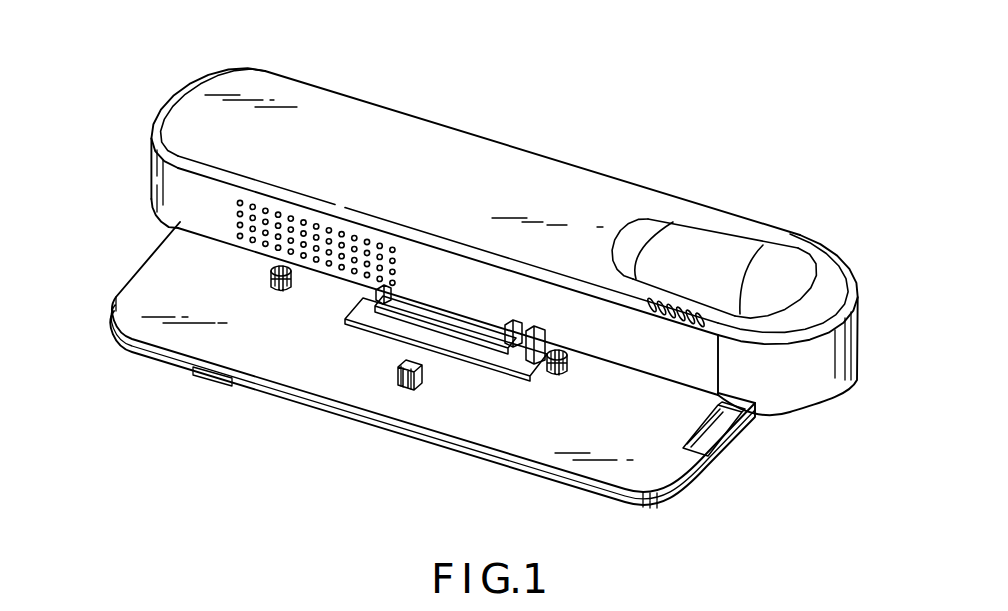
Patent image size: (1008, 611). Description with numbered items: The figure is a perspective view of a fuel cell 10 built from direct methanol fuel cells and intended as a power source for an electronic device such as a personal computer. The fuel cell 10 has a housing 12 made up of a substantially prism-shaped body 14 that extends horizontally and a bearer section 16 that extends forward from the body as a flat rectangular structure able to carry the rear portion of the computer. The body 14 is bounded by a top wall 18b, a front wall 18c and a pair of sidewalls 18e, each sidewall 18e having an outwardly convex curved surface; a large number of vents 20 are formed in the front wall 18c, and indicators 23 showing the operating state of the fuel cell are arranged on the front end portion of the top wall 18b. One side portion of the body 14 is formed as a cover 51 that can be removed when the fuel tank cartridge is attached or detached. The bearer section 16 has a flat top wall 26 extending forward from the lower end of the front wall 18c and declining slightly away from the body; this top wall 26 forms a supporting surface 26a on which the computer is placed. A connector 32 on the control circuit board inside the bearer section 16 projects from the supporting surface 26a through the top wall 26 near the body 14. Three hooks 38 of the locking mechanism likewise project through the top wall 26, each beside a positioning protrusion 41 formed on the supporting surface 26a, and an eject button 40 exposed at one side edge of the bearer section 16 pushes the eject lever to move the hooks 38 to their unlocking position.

The fuel cell 10 is at (563, 114).
The housing 12 is at (363, 98).
The body 14 is at (442, 151).
The bearer section 16 is at (296, 409).
The top wall 18b is at (594, 177).
The front wall 18c is at (638, 362).
The sidewalls 18e is at (150, 182).
The vents 20 is at (280, 206).
The indicators 23 is at (667, 346).
The top wall 26 is at (668, 477).
The supporting surface 26a is at (452, 426).
The connector 32 is at (445, 322).
The hooks 38 is at (287, 290).
The eject button 40 is at (721, 430).
The positioning protrusions 41 is at (292, 283).
The cover 51 is at (816, 255).